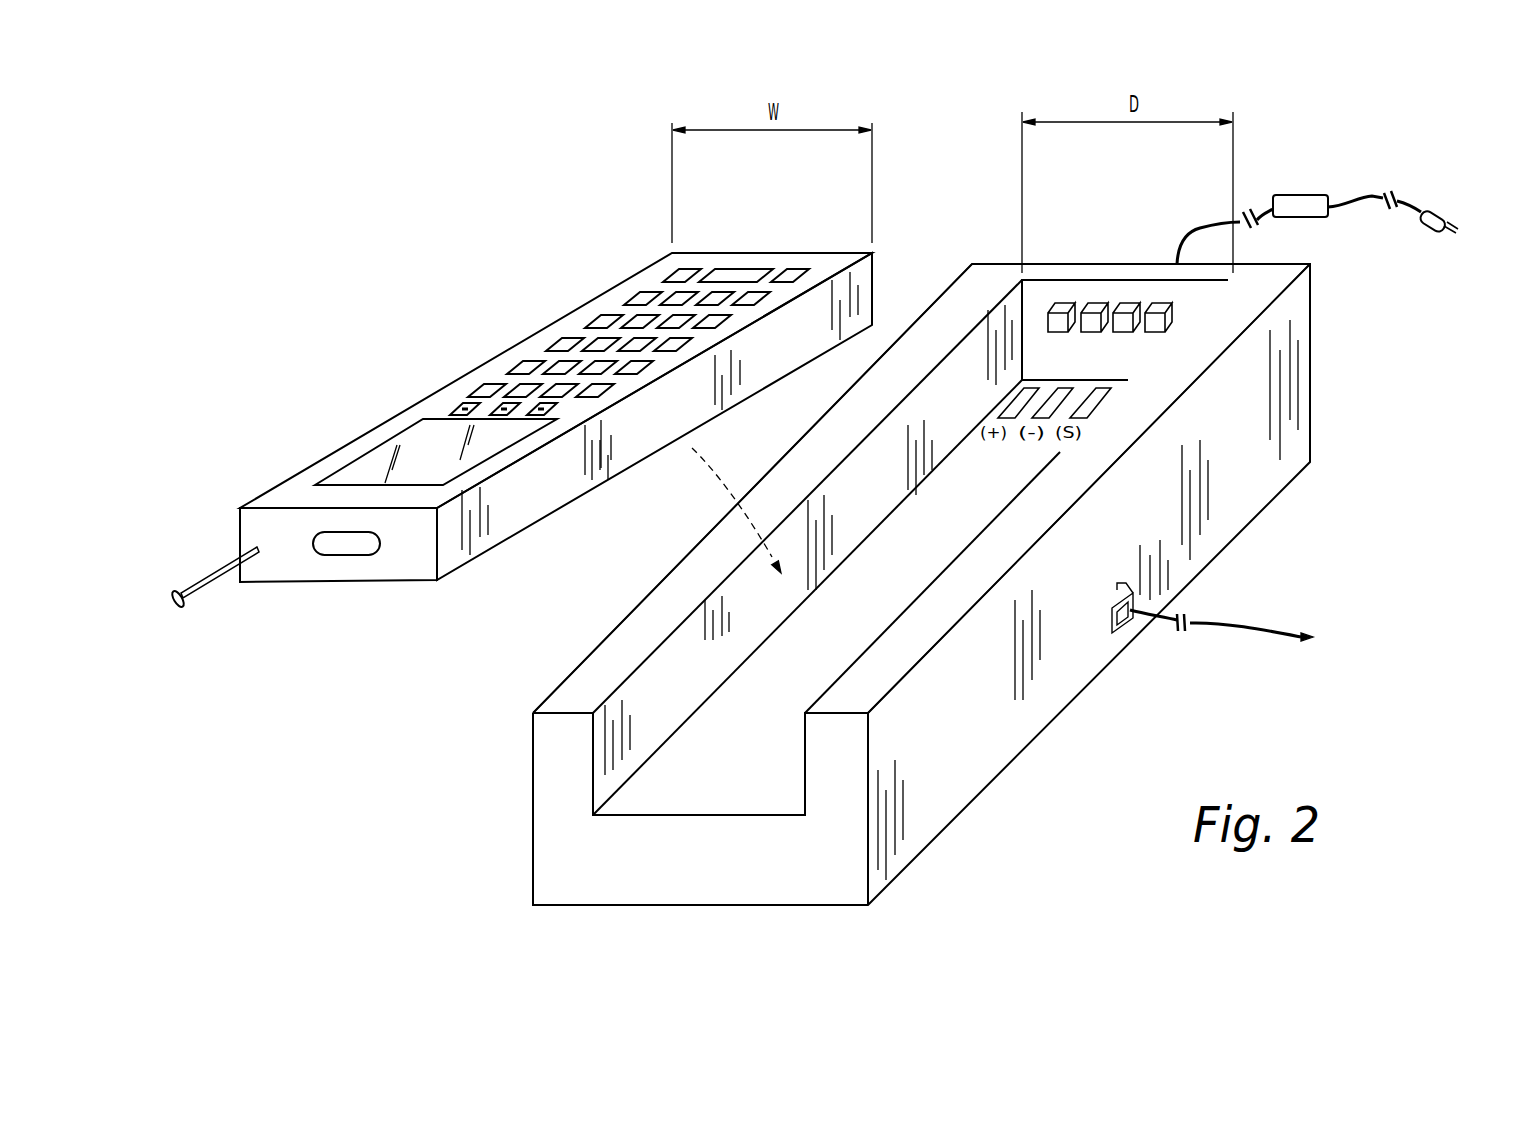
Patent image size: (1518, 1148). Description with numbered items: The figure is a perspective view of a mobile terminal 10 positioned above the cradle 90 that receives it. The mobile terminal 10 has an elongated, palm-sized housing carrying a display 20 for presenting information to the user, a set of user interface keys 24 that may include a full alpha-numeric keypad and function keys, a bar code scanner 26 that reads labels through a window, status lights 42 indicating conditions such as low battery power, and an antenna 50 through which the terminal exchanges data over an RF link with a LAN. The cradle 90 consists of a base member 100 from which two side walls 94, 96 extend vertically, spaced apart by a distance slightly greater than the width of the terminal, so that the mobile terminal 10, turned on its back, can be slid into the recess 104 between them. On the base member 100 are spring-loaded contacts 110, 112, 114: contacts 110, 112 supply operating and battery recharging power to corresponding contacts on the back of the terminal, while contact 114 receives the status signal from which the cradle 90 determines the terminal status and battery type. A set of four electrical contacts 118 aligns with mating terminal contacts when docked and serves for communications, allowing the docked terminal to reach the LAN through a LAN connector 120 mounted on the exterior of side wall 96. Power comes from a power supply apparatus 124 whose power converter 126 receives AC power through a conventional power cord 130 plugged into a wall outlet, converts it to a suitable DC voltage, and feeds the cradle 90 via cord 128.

The mobile terminal 10 is at (722, 240).
The display 20 is at (408, 457).
The user interface keys 24 is at (814, 248).
The bar code scanner 26 is at (363, 545).
The status lights 42 is at (440, 402).
The antenna 50 is at (220, 583).
The cradle 90 is at (1331, 397).
The side wall 94 is at (697, 567).
The side wall 96 is at (922, 628).
The base member 100 is at (770, 788).
The recess 104 is at (692, 779).
The contact 110 is at (1015, 405).
The contact 112 is at (1068, 358).
The contact 114 is at (1100, 385).
The electrical contacts 118 is at (1101, 279).
The LAN connector 120 is at (1253, 630).
The power supply apparatus 124 is at (1312, 195).
The power converter 126 is at (1313, 195).
The cord 128 is at (1192, 228).
The power cord 130 is at (1440, 210).